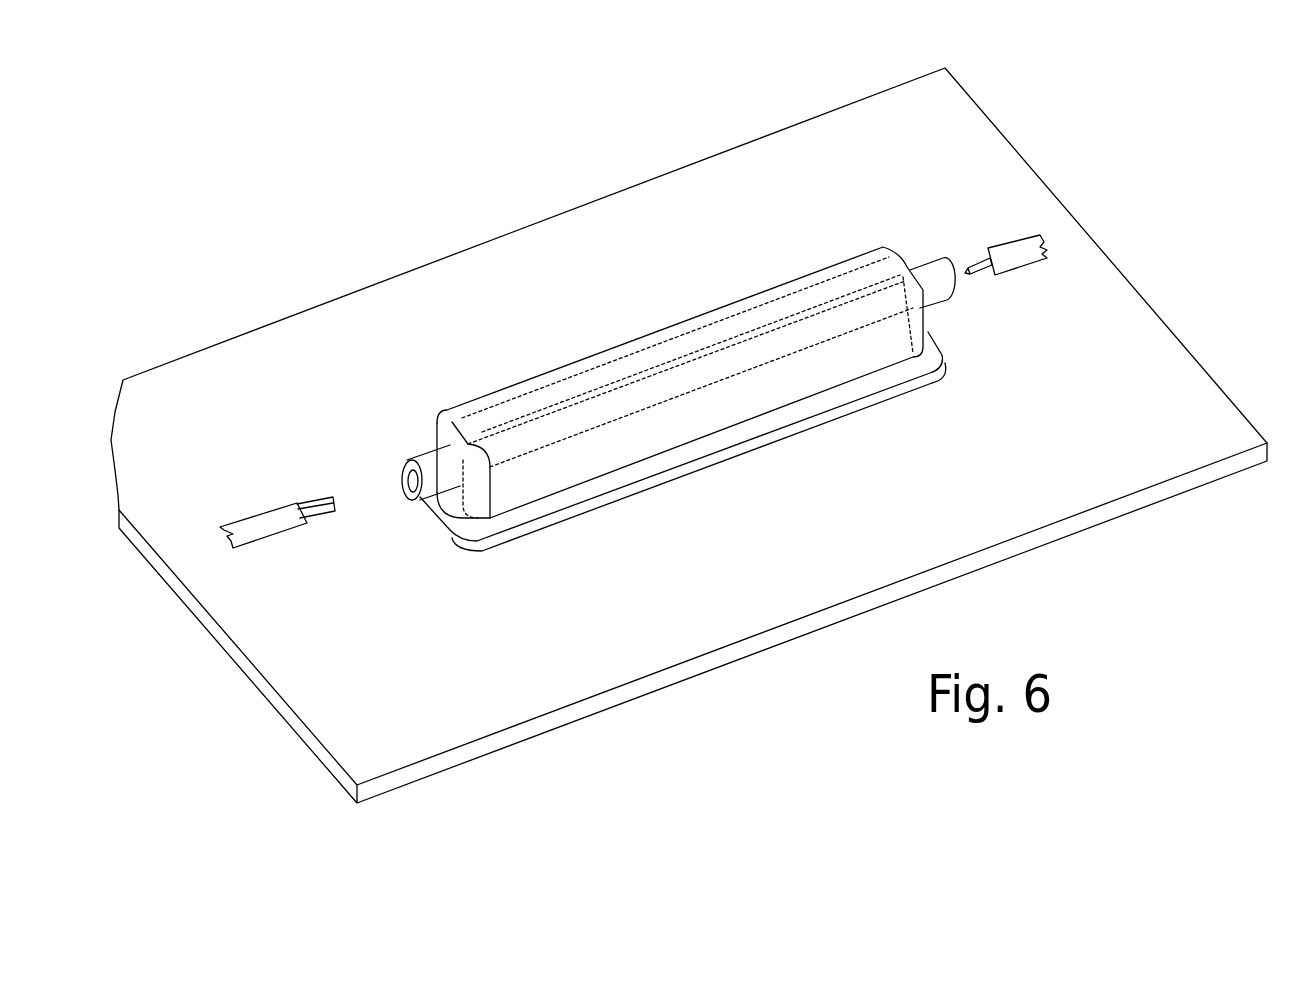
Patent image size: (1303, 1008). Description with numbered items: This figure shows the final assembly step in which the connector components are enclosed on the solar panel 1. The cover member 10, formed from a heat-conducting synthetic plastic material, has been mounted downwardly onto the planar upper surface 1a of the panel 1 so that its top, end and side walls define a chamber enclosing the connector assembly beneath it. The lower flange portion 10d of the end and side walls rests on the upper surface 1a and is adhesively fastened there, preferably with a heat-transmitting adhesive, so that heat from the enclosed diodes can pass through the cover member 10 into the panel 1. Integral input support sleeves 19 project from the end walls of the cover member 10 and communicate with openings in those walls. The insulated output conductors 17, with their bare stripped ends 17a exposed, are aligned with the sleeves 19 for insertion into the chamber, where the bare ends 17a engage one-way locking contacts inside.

The photovoltaic panel 1 is at (689, 457).
The planar upper surface 1a is at (490, 683).
The cover member 10 is at (646, 377).
The lower flange portion 10d is at (658, 463).
The input support sleeves 19 is at (428, 465).
The insulated output conductors 17 is at (262, 502).
The bare stripped ends 17a is at (328, 515).